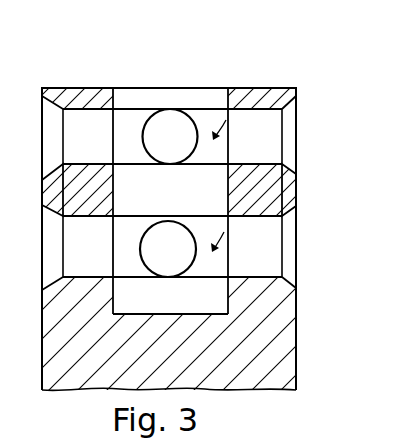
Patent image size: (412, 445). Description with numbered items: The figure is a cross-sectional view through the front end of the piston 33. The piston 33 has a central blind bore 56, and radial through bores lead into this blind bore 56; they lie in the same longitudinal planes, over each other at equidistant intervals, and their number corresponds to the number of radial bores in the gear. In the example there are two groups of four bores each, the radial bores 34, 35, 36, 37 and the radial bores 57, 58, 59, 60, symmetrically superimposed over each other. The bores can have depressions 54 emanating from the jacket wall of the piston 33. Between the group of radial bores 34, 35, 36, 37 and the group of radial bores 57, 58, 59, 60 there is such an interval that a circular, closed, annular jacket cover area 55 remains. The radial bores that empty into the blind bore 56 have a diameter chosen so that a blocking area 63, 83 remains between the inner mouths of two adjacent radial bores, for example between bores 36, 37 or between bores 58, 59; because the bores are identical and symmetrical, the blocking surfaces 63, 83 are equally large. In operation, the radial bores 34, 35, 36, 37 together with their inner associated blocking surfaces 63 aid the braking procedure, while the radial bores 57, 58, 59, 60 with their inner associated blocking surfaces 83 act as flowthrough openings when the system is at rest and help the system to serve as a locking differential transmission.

The piston 33 is at (296, 324).
The radial bore 34 is at (168, 249).
The radial bore 35 is at (88, 246).
The radial bore 36 is at (177, 268).
The radial bore 37 is at (255, 246).
The depression 54 is at (52, 279).
The annular jacket cover area 55 is at (42, 188).
The central blind bore 56 is at (166, 316).
The radial bore 57 is at (88, 136).
The radial bore 58 is at (255, 136).
The radial bore 59 is at (189, 104).
The radial bore 60 is at (191, 130).
The blocking area 63 is at (289, 215).
The blocking area 83 is at (263, 88).